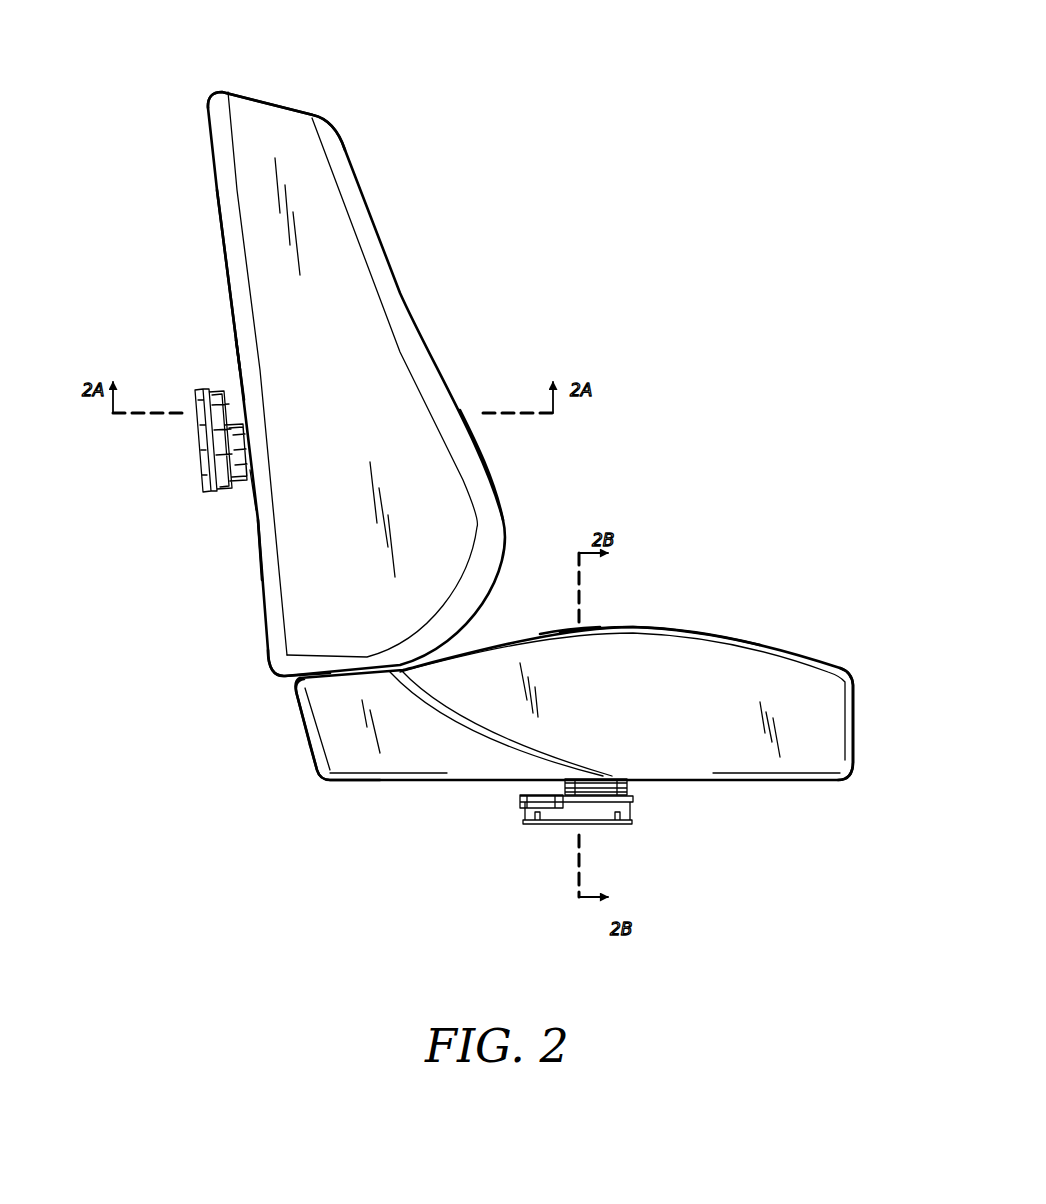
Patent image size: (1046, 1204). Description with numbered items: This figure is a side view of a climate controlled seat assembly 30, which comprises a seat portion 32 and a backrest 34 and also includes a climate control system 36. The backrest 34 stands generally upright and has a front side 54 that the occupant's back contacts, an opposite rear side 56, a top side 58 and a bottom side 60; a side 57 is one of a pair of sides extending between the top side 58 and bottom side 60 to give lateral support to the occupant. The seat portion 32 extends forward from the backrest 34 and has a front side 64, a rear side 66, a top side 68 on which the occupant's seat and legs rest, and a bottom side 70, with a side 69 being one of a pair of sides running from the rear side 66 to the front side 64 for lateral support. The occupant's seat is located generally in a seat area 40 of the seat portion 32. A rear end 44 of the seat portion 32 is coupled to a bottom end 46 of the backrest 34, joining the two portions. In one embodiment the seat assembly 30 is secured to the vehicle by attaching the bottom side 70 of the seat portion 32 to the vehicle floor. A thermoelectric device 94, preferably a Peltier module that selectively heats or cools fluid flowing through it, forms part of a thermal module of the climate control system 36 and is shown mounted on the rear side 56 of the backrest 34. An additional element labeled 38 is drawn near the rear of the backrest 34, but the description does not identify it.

The climate controlled seat assembly 30 is at (425, 82).
The seat portion 32 is at (659, 603).
The backrest 34 is at (413, 241).
The climate control system 36 is at (232, 538).
The mounting region of seat back 38 is at (186, 505).
The seat area 40 is at (197, 259).
The rear end 44 is at (378, 688).
The bottom end 46 is at (355, 668).
The front side 54 is at (498, 460).
The rear side 56 is at (197, 341).
The side 57 is at (330, 222).
The top side 58 is at (289, 73).
The bottom side 60 is at (283, 694).
The front side 64 is at (865, 722).
The rear side 66 is at (300, 762).
The top side 68 is at (566, 626).
The side 69 is at (678, 672).
The bottom side 70 is at (692, 795).
The thermoelectric device 94 is at (202, 466).